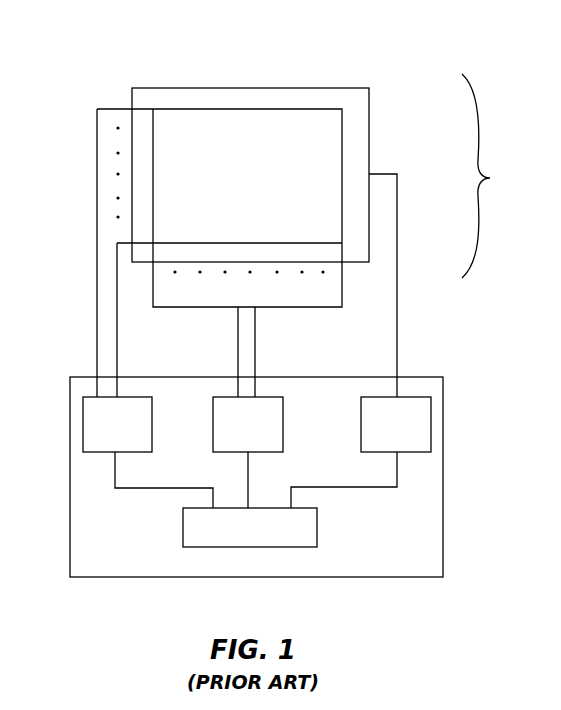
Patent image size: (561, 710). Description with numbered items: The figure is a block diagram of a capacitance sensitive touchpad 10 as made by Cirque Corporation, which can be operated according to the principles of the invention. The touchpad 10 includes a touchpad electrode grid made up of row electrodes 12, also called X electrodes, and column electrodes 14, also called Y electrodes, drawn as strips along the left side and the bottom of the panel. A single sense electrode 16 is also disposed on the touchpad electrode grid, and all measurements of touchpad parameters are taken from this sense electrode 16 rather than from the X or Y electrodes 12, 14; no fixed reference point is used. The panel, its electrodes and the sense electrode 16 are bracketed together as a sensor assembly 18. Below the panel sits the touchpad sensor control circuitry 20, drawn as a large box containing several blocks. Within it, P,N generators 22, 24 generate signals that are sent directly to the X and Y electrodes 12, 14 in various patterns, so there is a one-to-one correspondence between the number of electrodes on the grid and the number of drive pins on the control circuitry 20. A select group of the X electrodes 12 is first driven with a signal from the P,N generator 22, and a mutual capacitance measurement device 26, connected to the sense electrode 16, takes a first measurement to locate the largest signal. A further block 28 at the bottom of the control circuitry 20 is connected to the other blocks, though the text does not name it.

The capacitance sensitive touchpad 10 is at (350, 86).
The row electrodes 12 is at (108, 249).
The column electrodes 14 is at (348, 320).
The sense electrode 16 is at (399, 190).
The sensor assembly 18 is at (489, 176).
The touchpad sensor control circuitry 20 is at (443, 487).
The P,N generator 22 is at (83, 418).
The P,N generator 24 is at (283, 425).
The mutual capacitance measurement device 26 is at (360, 428).
The processor 28 is at (317, 525).